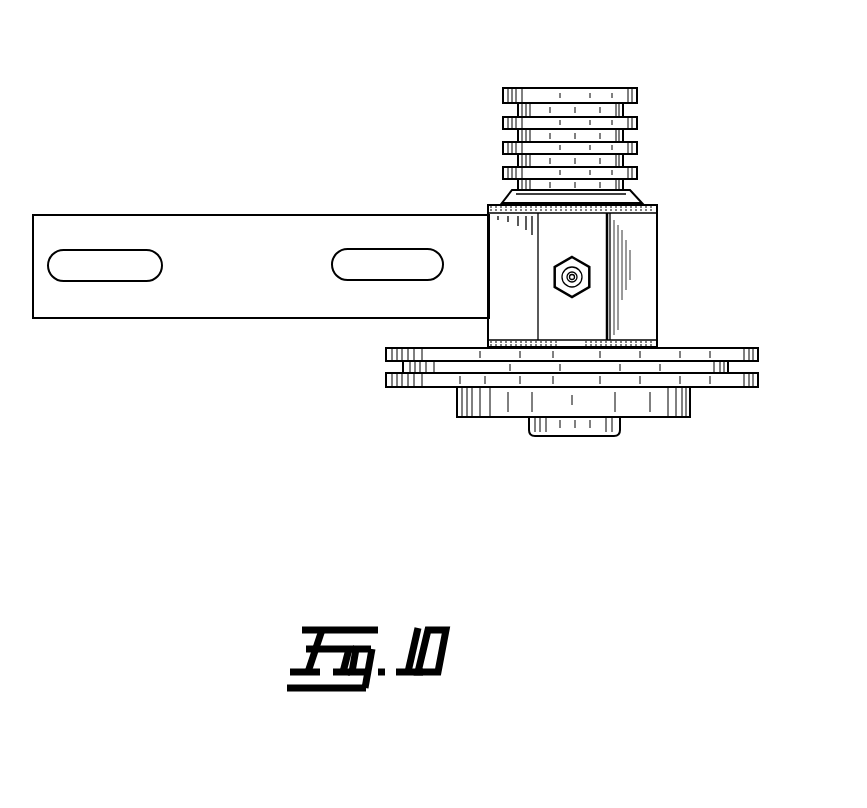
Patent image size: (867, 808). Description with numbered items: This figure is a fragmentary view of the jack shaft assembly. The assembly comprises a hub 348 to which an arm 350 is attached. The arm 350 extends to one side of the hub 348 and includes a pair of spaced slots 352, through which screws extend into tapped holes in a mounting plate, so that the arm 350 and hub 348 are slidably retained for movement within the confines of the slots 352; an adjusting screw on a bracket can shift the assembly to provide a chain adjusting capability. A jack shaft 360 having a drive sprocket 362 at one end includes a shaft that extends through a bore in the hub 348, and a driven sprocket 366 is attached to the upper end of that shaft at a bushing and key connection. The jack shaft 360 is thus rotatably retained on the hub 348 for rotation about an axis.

The hub 348 is at (642, 273).
The arm 350 is at (305, 245).
The spaced slots 352 is at (160, 252).
The jack shaft 360 is at (582, 83).
The drive sprocket 362 is at (637, 97).
The driven sprocket 366 is at (713, 378).